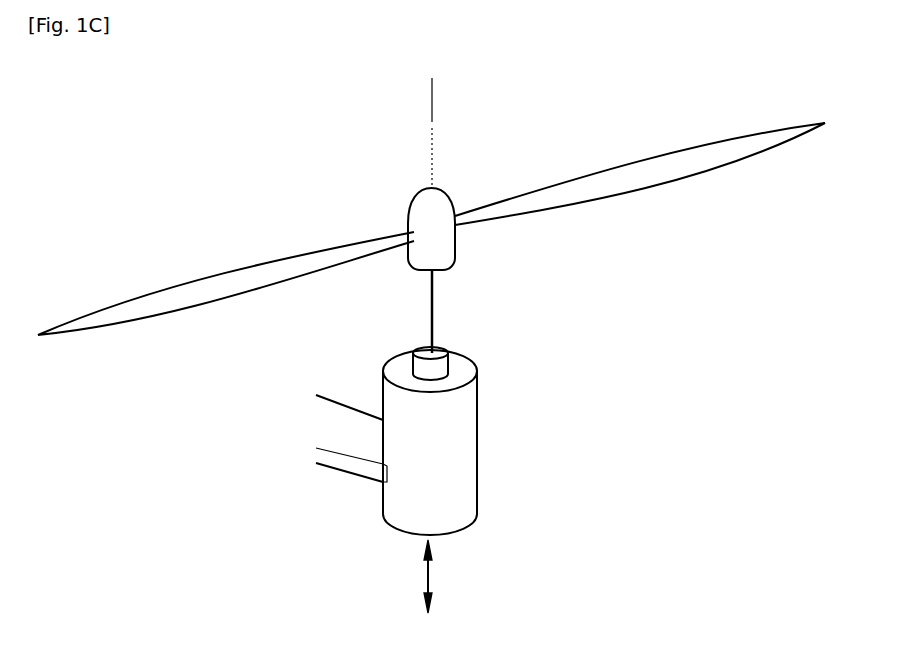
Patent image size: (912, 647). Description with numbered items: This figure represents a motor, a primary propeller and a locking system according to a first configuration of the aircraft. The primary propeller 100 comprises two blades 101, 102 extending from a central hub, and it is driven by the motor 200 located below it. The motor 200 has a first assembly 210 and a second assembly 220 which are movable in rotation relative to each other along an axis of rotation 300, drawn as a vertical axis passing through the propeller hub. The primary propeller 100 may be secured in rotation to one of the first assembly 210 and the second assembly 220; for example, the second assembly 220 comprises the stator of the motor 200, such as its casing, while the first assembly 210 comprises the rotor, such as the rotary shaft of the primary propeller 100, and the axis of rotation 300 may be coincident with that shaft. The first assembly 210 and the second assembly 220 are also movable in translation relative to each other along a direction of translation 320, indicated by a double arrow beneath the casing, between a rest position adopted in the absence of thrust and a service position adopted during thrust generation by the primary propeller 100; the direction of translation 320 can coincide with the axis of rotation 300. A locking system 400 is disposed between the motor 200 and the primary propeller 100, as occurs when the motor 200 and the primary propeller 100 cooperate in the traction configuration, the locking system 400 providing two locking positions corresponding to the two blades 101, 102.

The primary propeller 100 is at (315, 152).
The blade 101 is at (715, 150).
The blade 102 is at (127, 318).
The motor 200 is at (488, 422).
The first assembly 210 is at (428, 324).
The second assembly 220 is at (467, 478).
The axis of rotation 300 is at (434, 105).
The direction of translation 320 is at (431, 577).
The locking system 400 is at (440, 350).